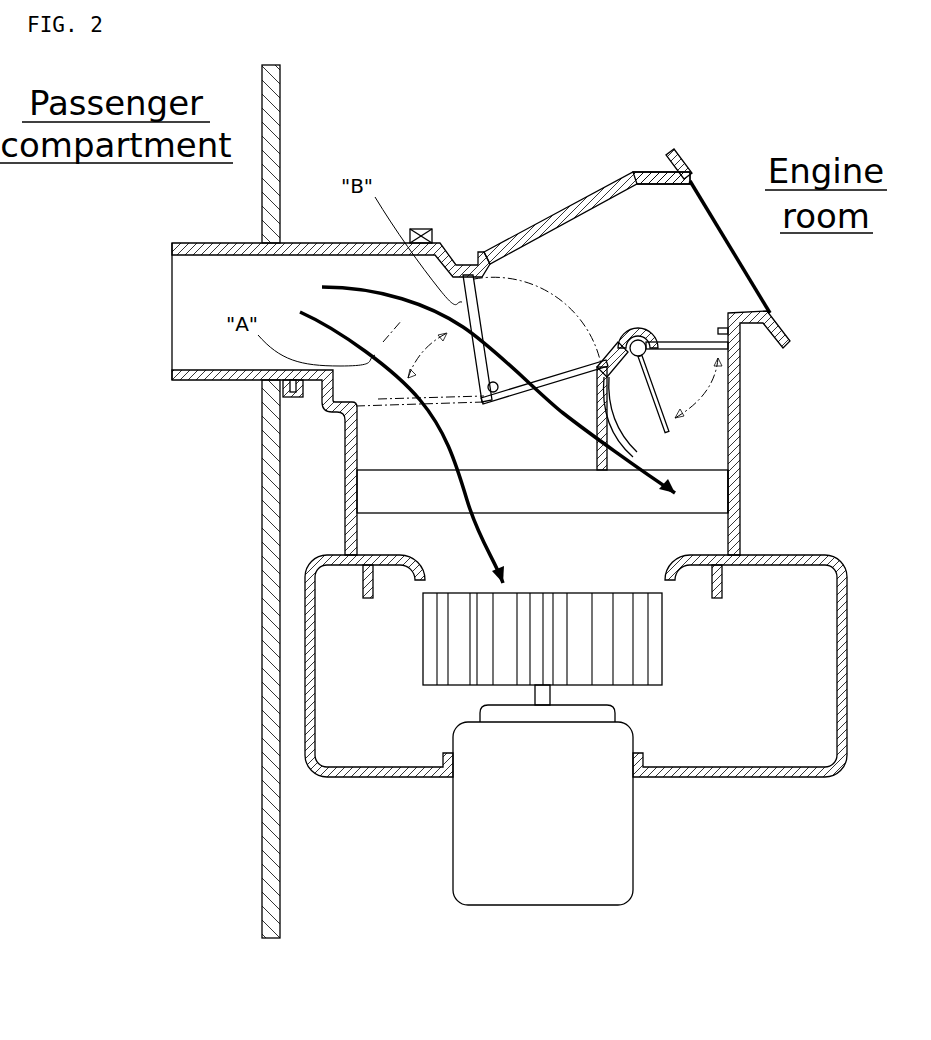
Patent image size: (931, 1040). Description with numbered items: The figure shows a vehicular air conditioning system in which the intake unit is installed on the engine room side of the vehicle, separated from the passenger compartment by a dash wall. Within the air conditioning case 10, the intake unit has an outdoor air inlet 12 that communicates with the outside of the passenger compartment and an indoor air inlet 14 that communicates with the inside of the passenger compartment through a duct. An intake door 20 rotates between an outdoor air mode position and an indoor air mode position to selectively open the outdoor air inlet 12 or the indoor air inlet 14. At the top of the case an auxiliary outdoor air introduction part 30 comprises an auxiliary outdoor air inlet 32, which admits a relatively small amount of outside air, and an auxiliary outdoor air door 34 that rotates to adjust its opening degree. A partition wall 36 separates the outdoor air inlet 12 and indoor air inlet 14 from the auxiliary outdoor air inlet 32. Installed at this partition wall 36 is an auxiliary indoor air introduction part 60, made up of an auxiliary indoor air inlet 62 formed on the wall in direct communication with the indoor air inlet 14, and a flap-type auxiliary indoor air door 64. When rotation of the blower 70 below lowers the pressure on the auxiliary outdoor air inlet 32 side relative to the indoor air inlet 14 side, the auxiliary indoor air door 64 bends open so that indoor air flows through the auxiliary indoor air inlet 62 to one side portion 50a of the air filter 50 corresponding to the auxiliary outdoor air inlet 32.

The air conditioning case 10 is at (596, 194).
The outdoor air inlet 12 is at (562, 272).
The indoor air inlet 14 is at (378, 355).
The intake door 20 is at (508, 288).
The auxiliary outdoor air introduction part 30 is at (670, 203).
The auxiliary outdoor air inlet 32 is at (706, 330).
The auxiliary outdoor air door 34 is at (672, 328).
The partition wall 36 is at (597, 390).
The air filter 50 is at (533, 503).
The one side portion of the air filter 50a is at (735, 492).
The auxiliary indoor air introduction part 60 is at (726, 400).
The auxiliary indoor air inlet 62 is at (607, 445).
The auxiliary indoor air door 64 is at (615, 410).
The blower 70 is at (662, 640).